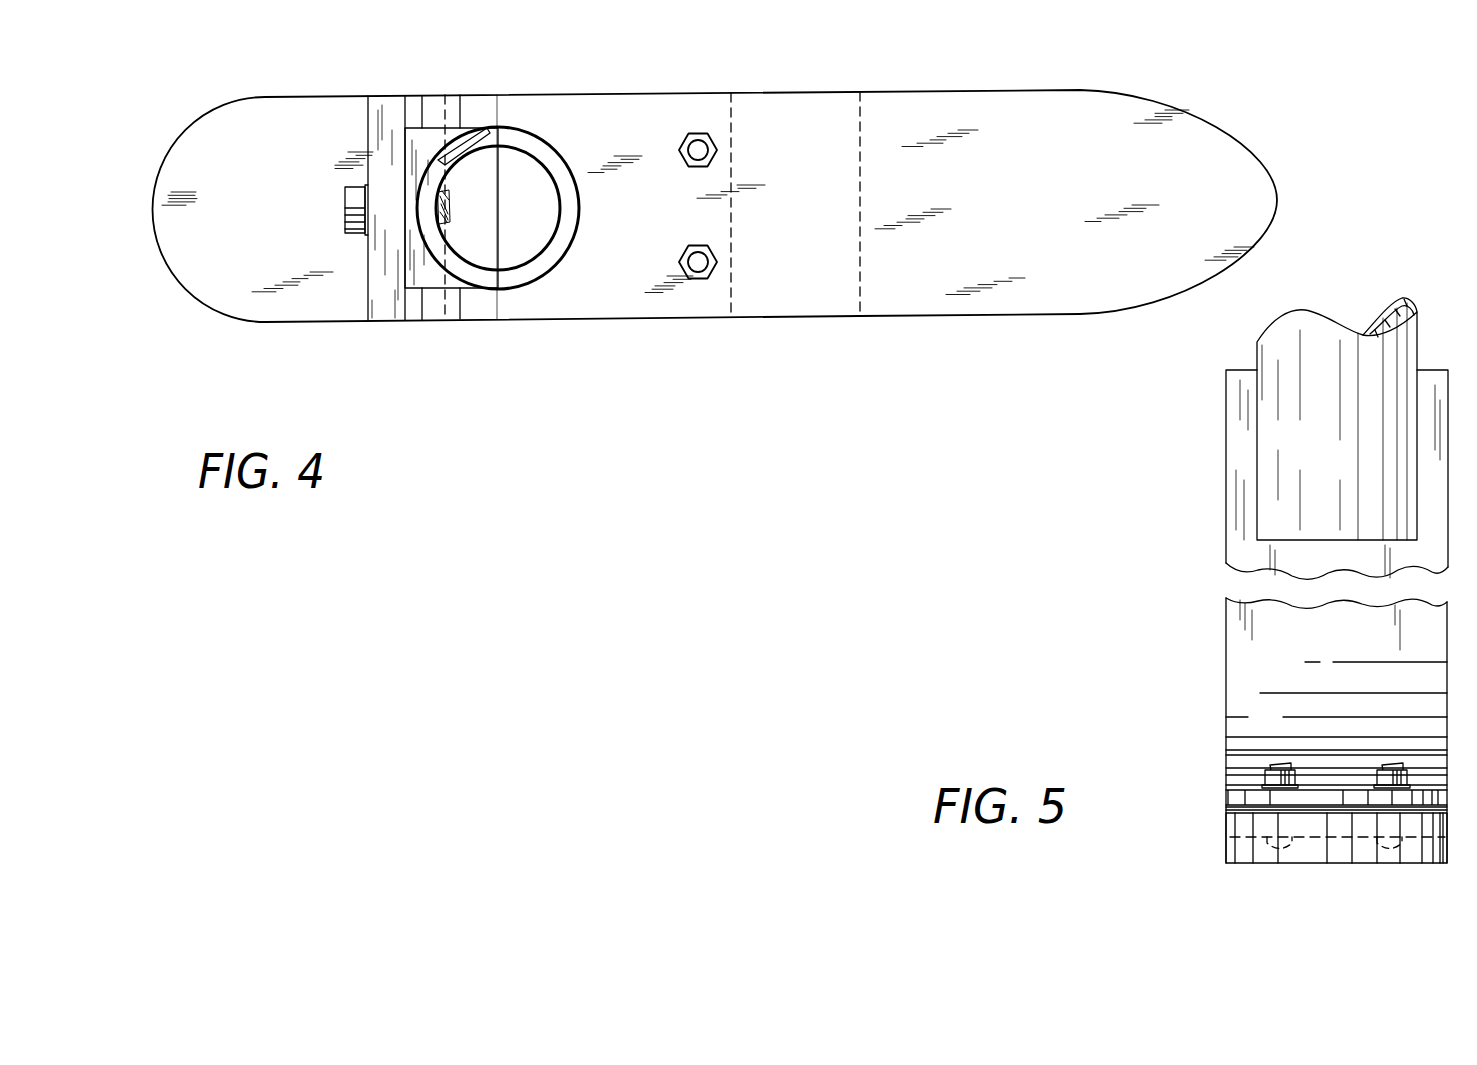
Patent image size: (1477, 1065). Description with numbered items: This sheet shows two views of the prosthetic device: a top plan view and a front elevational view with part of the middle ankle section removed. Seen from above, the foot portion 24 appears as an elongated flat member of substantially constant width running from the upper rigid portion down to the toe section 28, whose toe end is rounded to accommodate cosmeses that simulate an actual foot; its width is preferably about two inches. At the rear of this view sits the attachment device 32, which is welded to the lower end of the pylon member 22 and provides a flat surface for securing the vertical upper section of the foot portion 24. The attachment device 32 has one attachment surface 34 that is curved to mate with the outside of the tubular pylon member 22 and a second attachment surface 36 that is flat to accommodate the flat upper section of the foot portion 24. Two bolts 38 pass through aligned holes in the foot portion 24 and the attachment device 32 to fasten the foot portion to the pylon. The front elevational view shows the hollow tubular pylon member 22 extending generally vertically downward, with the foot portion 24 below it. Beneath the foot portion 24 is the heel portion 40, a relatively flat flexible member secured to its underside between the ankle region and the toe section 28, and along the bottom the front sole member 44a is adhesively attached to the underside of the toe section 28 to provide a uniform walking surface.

In FIG. 5, the pylon member 22 is at (1257, 446).
In FIG. 5, the foot portion 24 is at (1226, 677).
In FIG. 4, the toe section 28 is at (1036, 90).
In FIG. 4, the attachment device 32 is at (417, 145).
In FIG. 4, the attachment surface 34 is at (440, 160).
In FIG. 4, the second attachment surface 36 is at (400, 168).
In FIG. 4, the bolts 38 is at (343, 197).
In FIG. 4, the heel portion 40 is at (183, 292).
In FIG. 5, the front sole member 44a is at (1226, 852).